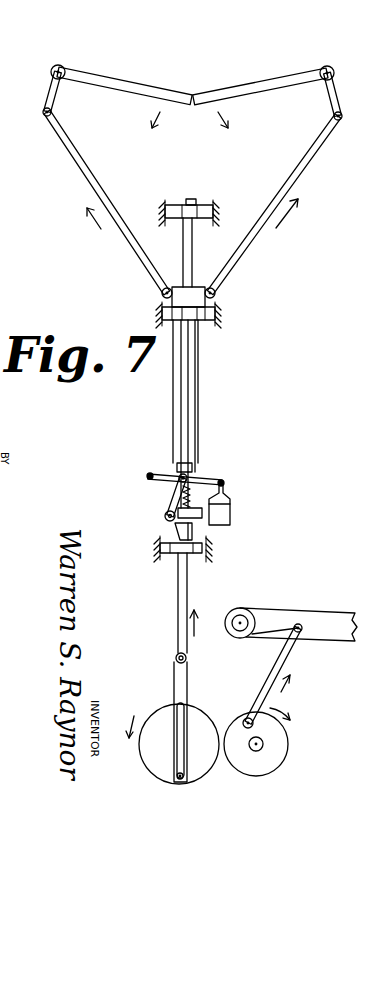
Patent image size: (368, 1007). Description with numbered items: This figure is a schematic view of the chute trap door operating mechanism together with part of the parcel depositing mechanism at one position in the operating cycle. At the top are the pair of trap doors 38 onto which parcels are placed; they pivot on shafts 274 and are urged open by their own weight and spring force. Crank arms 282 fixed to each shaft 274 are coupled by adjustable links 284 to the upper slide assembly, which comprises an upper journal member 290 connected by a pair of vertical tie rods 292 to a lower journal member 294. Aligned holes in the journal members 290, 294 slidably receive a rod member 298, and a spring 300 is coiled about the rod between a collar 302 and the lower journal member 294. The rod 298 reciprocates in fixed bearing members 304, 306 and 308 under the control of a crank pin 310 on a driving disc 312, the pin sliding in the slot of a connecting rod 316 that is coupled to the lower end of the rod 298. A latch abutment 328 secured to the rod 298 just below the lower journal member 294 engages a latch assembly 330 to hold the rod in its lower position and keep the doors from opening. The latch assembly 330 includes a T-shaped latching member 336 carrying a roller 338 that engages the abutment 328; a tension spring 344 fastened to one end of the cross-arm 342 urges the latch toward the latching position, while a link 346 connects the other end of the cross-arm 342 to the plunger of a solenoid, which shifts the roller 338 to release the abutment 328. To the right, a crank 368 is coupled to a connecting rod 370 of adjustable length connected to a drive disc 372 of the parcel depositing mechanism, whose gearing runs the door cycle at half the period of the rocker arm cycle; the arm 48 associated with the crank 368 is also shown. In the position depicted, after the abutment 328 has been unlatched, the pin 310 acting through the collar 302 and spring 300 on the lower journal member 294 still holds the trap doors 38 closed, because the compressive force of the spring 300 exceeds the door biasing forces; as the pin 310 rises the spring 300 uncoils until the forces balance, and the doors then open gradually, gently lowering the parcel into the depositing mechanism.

The trap doors 38 is at (195, 98).
The shafts 274 is at (66, 64).
The crank arms 282 is at (46, 89).
The adjustable links 284 is at (88, 185).
The upper journal member 290 is at (205, 297).
The vertical tie rods 292 is at (175, 380).
The lower journal member 294 is at (203, 513).
The rod member 298 is at (192, 246).
The spring 300 is at (230, 501).
The collar 302 is at (192, 466).
The fixed bearing member 304 is at (184, 183).
The fixed bearing member 306 is at (212, 314).
The fixed bearing member 308 is at (208, 551).
The crank pin 310 is at (183, 780).
The driving disc 312 is at (153, 764).
The connecting rod 316 is at (176, 676).
The latch abutment 328 is at (195, 535).
The latch assembly 330 is at (175, 474).
The T-shaped latching member 336 is at (174, 485).
The roller 338 is at (165, 518).
The cross-arm 342 is at (224, 481).
The tension spring 344 is at (149, 494).
The link 346 is at (226, 494).
The crank 368 is at (285, 600).
The arm 48 is at (350, 596).
The connecting rod 370 is at (288, 660).
The drive disc 372 is at (268, 774).